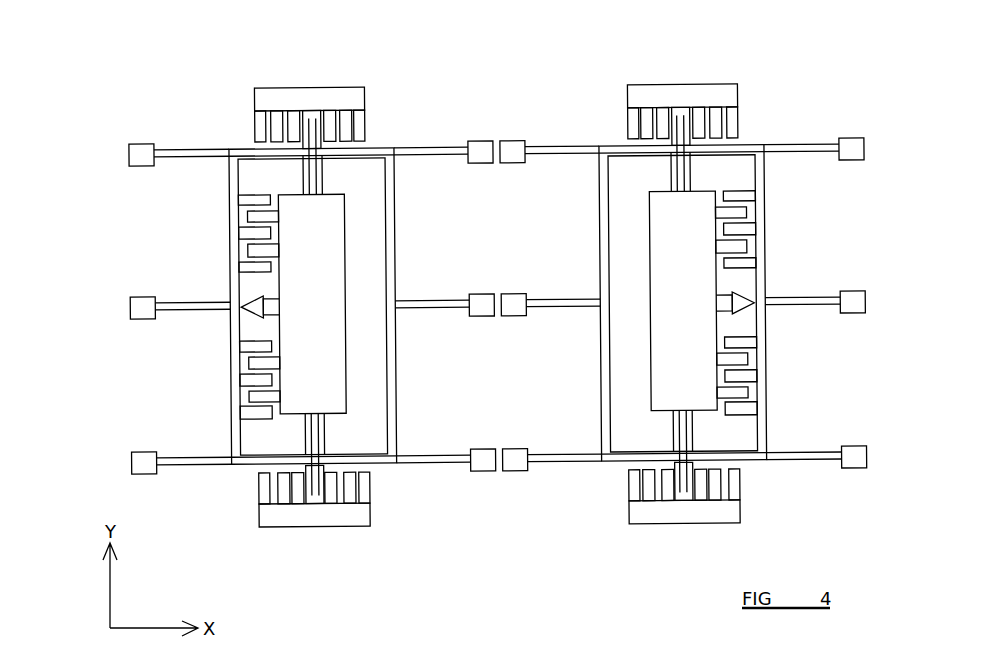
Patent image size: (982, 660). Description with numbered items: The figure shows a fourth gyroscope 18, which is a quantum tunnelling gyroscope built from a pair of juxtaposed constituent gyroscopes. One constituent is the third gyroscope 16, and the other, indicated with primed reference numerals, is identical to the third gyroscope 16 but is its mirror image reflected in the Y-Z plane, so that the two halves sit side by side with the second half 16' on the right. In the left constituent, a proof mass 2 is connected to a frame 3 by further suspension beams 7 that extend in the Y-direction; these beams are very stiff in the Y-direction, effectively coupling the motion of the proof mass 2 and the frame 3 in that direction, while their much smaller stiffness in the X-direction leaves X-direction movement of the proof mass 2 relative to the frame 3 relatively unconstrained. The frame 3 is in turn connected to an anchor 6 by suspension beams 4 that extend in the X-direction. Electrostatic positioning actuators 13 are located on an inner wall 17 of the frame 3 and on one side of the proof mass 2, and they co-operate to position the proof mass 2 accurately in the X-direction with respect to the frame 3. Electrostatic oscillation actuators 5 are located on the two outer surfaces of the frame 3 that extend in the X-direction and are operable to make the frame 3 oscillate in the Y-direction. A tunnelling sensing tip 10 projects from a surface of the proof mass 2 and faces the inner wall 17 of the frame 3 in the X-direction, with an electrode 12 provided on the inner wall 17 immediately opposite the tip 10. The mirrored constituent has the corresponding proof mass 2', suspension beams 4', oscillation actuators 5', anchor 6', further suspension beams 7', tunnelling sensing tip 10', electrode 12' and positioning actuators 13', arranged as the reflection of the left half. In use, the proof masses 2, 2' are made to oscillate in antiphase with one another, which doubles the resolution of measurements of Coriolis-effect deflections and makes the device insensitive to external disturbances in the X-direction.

The proof mass 2 is at (324, 304).
The proof mass 2' is at (672, 301).
The frame 3 is at (394, 409).
The suspension beams 4 is at (312, 306).
The suspension beams 4' is at (686, 303).
The electrostatic oscillation actuators 5 is at (334, 284).
The electrostatic oscillation actuators 5' is at (711, 286).
The anchor 6 is at (305, 308).
The anchor 6' is at (687, 304).
The further suspension beams 7 is at (341, 307).
The further suspension beams 7' is at (657, 304).
The tunnelling sensing tip 10 is at (232, 344).
The tunnelling sensing tip 10' is at (765, 345).
The electrode 12 is at (218, 329).
The electrode 12' is at (772, 324).
The electrostatic positioning actuators 13 is at (221, 318).
The electrostatic positioning actuators 13' is at (769, 302).
The third gyroscope 16 is at (66, 114).
The mirror-image third gyroscope 16' is at (848, 111).
The inner wall 17 is at (252, 398).
The fourth gyroscope 18 is at (107, 90).